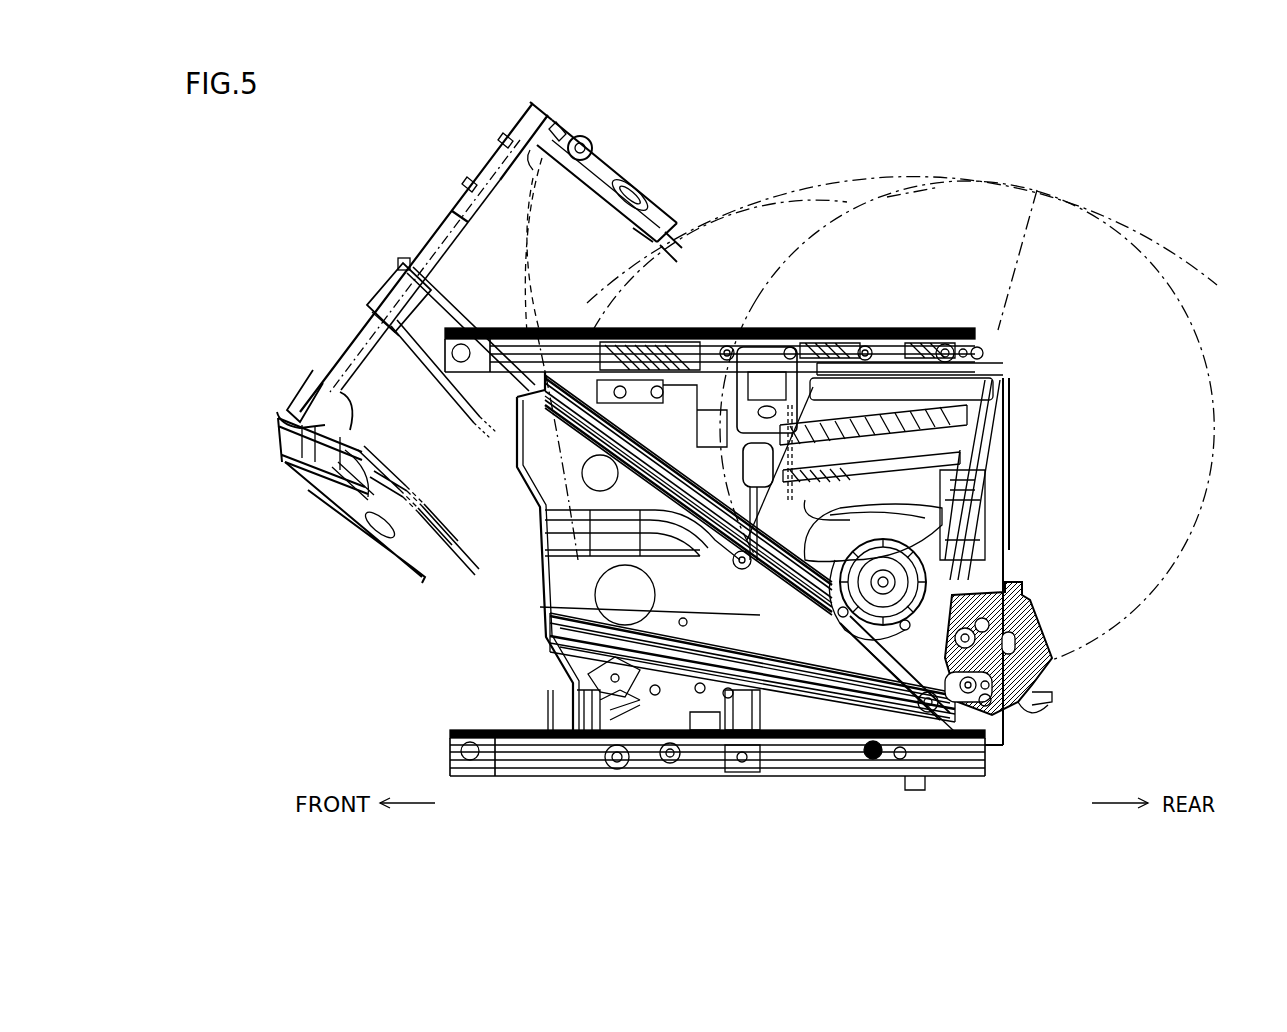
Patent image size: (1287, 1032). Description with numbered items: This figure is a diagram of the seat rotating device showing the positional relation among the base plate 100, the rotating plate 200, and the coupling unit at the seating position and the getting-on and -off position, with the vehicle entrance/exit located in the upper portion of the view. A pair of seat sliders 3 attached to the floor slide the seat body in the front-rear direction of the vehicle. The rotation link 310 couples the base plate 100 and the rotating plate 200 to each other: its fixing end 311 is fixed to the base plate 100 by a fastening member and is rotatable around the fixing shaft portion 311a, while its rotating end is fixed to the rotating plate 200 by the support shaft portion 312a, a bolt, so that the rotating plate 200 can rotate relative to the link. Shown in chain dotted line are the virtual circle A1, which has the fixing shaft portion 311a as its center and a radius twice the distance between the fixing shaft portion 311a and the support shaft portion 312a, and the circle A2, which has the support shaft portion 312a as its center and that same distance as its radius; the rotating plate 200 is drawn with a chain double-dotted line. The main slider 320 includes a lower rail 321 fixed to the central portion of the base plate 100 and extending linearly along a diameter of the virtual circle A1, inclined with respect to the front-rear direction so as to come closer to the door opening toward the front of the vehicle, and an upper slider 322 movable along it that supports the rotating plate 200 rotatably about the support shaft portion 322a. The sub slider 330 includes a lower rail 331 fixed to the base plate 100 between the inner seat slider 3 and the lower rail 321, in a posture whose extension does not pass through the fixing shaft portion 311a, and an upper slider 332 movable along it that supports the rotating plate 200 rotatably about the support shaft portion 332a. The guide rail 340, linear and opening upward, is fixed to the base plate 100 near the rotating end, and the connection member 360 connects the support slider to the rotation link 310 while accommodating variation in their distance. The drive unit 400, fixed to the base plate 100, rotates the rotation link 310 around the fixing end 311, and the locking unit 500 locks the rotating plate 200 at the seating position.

The seat slider 3 is at (689, 326).
The base plate 100 is at (536, 527).
The rotating plate 200 is at (450, 203).
The rotation link 310 is at (1008, 470).
The fixing end 311 is at (923, 650).
The fixing shaft portion 311a is at (985, 700).
The support shaft portion 312a is at (795, 348).
The main slider 320 is at (732, 852).
The lower rail 321 is at (667, 610).
The upper slider 322 is at (733, 560).
The support shaft portion 322a is at (761, 548).
The sub slider 330 is at (912, 852).
The lower rail 331 is at (832, 665).
The upper slider 332 is at (893, 700).
The support shaft portion 332a is at (918, 690).
The guide rail 340 is at (885, 360).
The connection member 360 is at (977, 332).
The drive unit 400 is at (978, 522).
The locking unit 500 is at (1047, 697).
The virtual circle A1 is at (951, 177).
The circle A2 is at (820, 194).